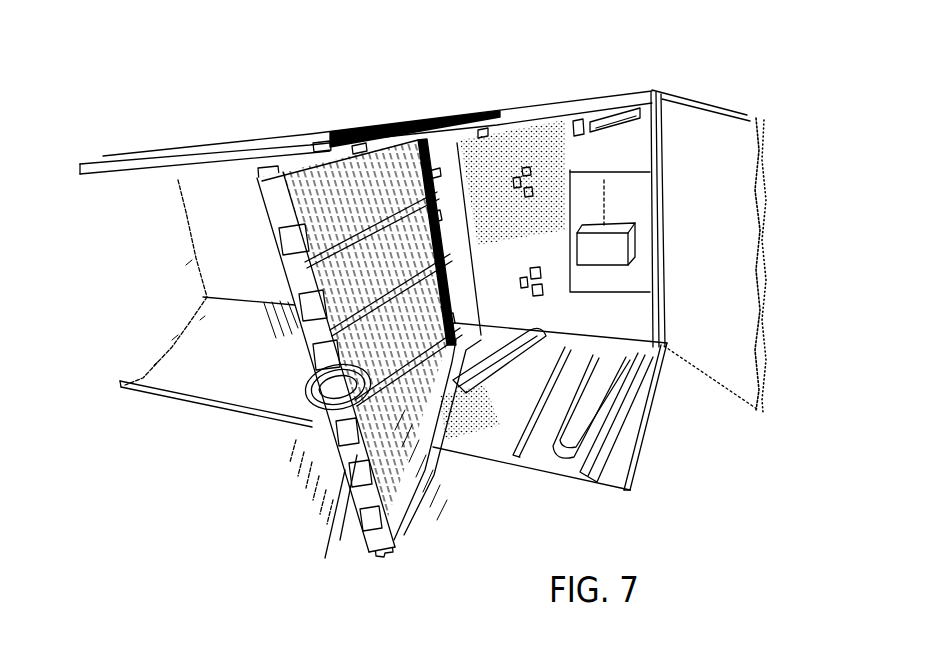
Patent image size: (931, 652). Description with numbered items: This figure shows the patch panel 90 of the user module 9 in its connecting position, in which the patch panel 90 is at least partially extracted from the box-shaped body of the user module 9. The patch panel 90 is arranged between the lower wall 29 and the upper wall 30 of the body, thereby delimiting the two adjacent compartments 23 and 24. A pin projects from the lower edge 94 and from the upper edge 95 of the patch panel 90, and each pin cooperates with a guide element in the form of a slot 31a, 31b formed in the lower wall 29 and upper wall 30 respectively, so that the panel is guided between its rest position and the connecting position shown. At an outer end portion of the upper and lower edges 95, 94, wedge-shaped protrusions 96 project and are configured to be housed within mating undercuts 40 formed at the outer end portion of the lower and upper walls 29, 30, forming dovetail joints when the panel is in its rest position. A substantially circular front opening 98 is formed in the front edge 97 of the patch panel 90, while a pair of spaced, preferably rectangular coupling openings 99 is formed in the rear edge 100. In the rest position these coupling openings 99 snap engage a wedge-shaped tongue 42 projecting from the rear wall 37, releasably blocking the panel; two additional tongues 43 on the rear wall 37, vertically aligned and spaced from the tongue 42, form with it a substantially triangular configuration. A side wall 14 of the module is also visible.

The user module 9 is at (588, 71).
The side wall 14 is at (720, 222).
The compartment 23 is at (218, 257).
The compartment 24 is at (622, 312).
The lower wall 29 is at (488, 432).
The upper wall 30 is at (550, 110).
The slot 31a is at (503, 357).
The slot 31b is at (440, 113).
The rear wall 37 is at (222, 184).
The mating undercut 40 is at (313, 147).
The tongue 42 is at (518, 184).
The additional tongue 43 is at (531, 178).
The patch panel 90 is at (262, 211).
The lower edge 94 is at (403, 513).
The upper edge 95 is at (363, 147).
The wedge-shaped protrusion 96 is at (268, 172).
The front edge 97 is at (304, 327).
The front opening 98 is at (293, 420).
The coupling opening 99 is at (432, 216).
The rear edge 100 is at (432, 175).